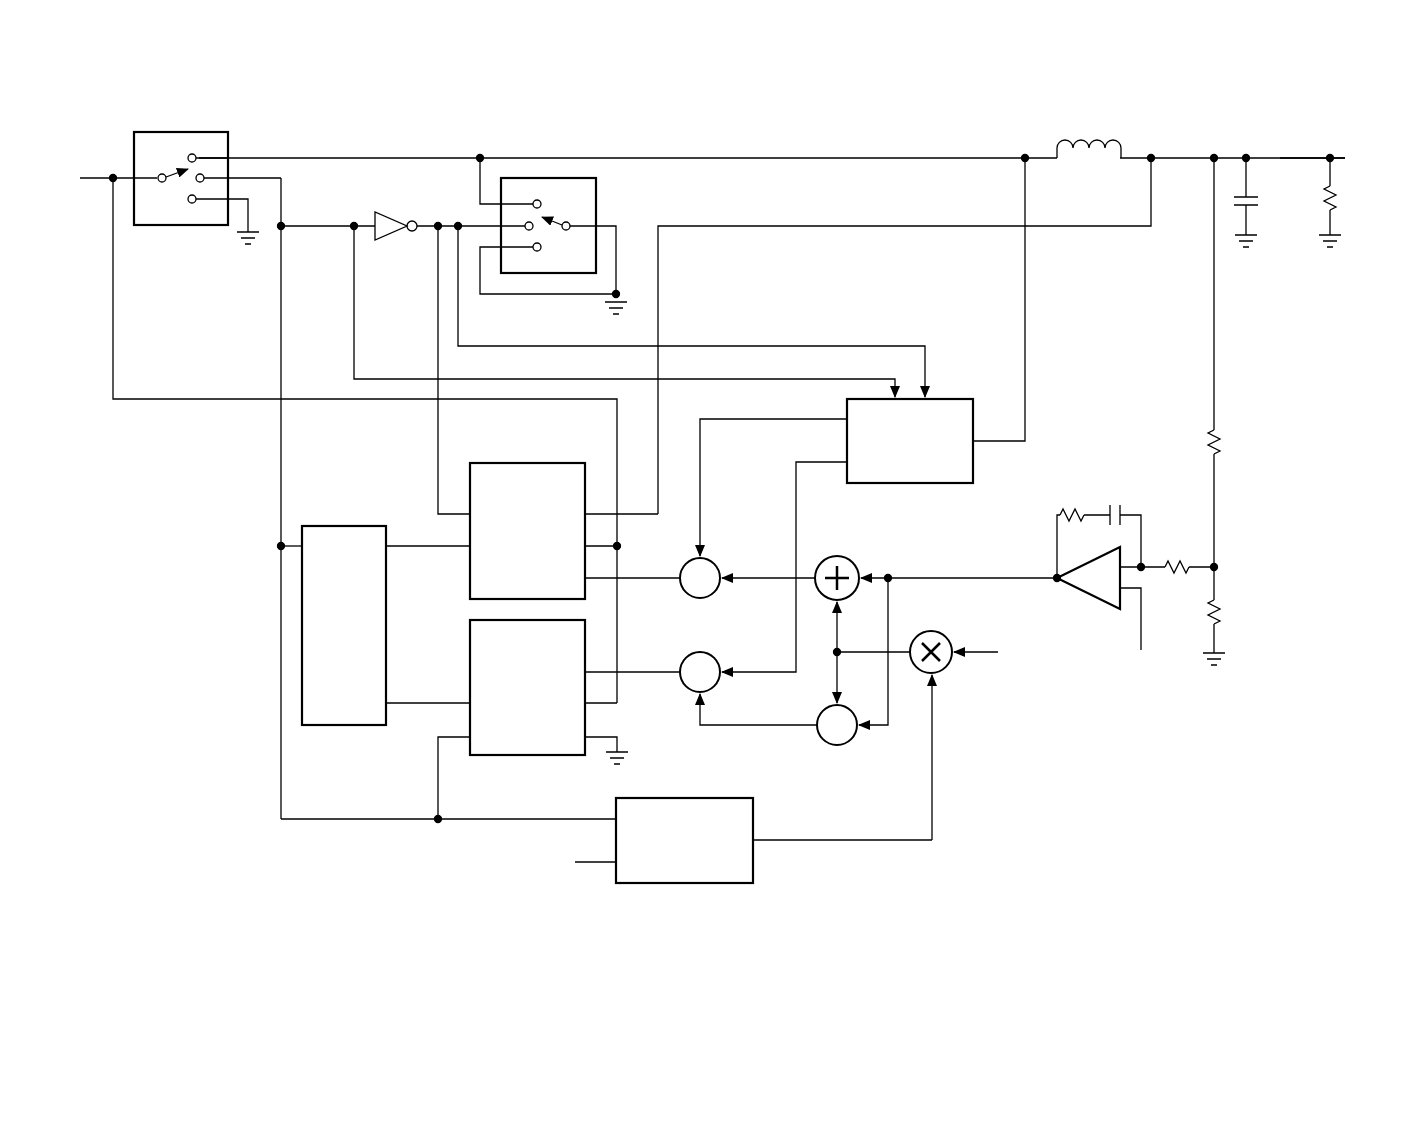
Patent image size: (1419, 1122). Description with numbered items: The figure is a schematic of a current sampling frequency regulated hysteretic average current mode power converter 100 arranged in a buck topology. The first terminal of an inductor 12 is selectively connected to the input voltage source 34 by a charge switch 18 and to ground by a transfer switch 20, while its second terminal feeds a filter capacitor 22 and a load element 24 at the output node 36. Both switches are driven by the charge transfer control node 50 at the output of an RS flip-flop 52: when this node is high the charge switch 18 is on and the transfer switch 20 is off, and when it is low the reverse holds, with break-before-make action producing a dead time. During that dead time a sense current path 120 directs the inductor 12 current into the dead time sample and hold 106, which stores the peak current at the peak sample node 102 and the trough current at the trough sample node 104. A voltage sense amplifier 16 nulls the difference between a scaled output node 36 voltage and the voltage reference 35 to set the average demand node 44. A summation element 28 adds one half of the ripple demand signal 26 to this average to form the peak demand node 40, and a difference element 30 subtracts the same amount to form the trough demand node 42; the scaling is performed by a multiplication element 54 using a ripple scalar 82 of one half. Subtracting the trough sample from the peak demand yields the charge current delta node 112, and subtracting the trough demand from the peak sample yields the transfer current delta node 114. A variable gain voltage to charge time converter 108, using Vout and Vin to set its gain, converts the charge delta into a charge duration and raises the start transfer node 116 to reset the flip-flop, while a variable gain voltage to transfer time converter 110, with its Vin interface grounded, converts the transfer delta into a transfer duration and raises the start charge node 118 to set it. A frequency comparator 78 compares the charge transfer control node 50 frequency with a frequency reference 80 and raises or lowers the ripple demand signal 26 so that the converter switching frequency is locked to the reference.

The current sampling frequency regulated hysteretic average current mode power conve 100 is at (186, 698).
The inductor 12 is at (1096, 140).
The voltage sense amplifier 16 is at (1090, 606).
The charge switch 18 is at (172, 132).
The transfer switch 20 is at (596, 205).
The filter capacitor 22 is at (1258, 200).
The load element 24 is at (1340, 205).
The ripple demand signal 26 is at (870, 843).
The summation element 28 is at (840, 556).
The difference element 30 is at (843, 745).
The input voltage source 34 is at (100, 178).
The voltage reference 35 is at (1142, 622).
The output node 36 is at (1286, 158).
The peak demand node 40 is at (760, 590).
The trough demand node 42 is at (764, 730).
The average demand node 44 is at (910, 578).
The charge transfer control node 50 is at (281, 455).
The RS flip-flop 52 is at (347, 728).
The multiplication element 54 is at (940, 668).
The frequency comparator 78 is at (690, 884).
The frequency reference 80 is at (605, 864).
The ripple scalar 82 is at (975, 650).
The peak sample node 102 is at (796, 512).
The trough sample node 104 is at (703, 470).
The dead time sample and hold 106 is at (951, 399).
The variable gain voltage to charge time converter 108 is at (524, 463).
The variable gain voltage to transfer time converter 110 is at (526, 758).
The charge current delta node 112 is at (650, 586).
The transfer current delta node 114 is at (650, 680).
The start transfer node 116 is at (432, 556).
The start charge node 118 is at (424, 712).
The sense current path 120 is at (1027, 302).